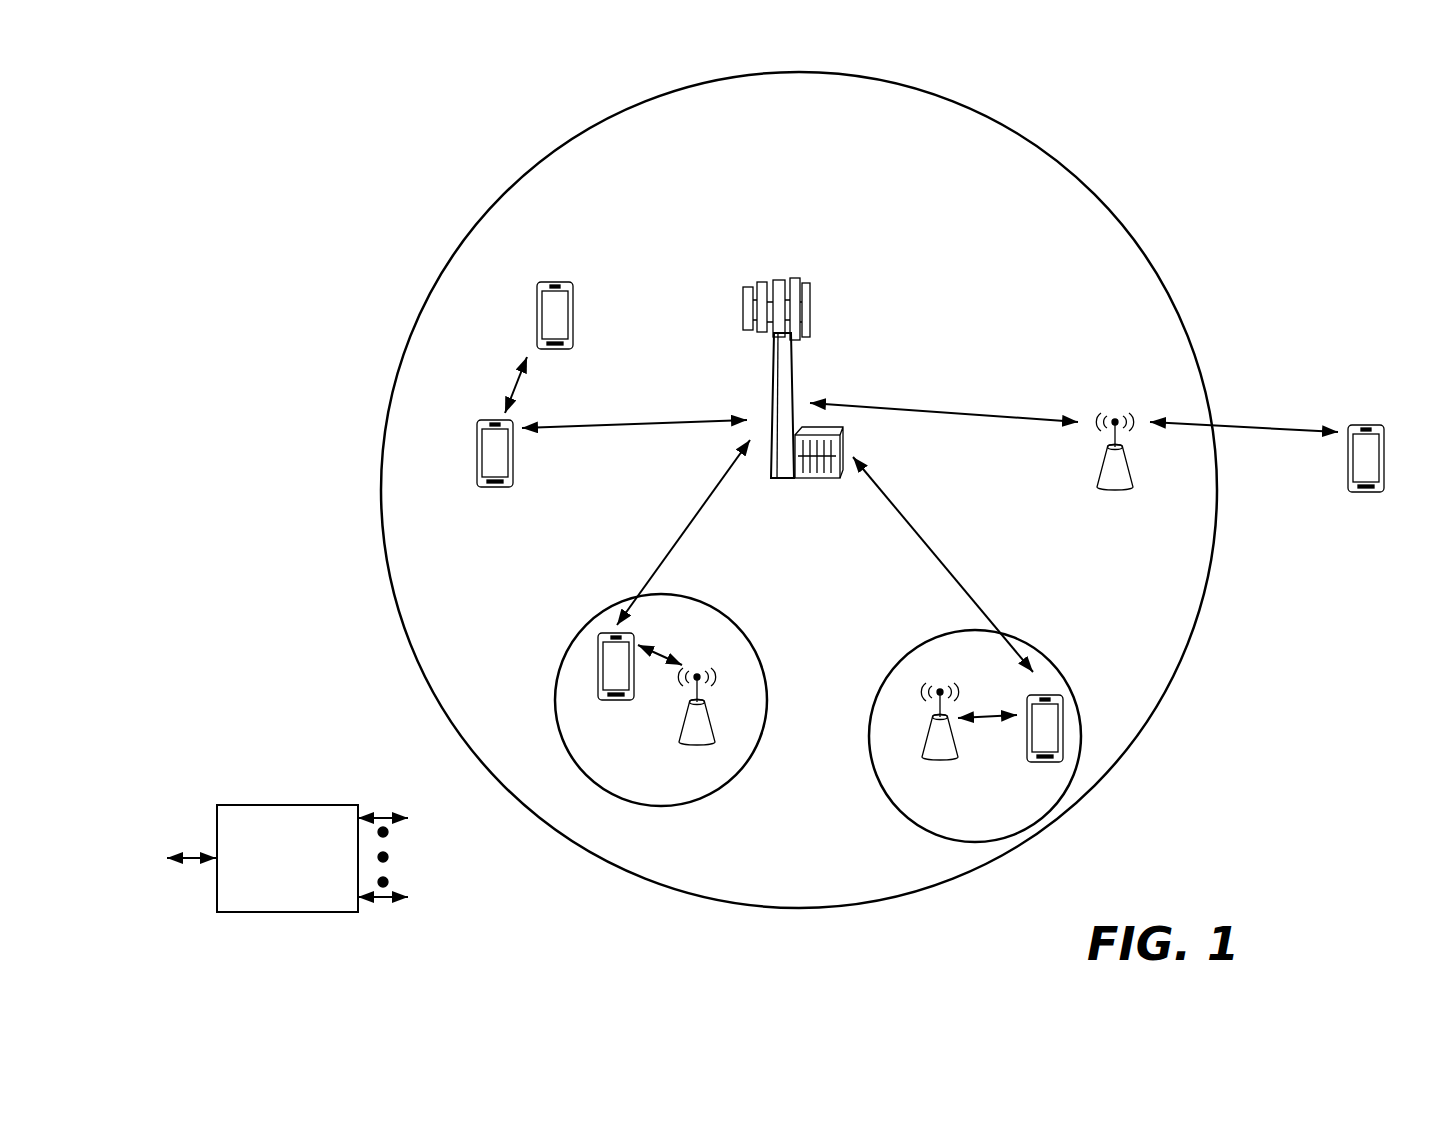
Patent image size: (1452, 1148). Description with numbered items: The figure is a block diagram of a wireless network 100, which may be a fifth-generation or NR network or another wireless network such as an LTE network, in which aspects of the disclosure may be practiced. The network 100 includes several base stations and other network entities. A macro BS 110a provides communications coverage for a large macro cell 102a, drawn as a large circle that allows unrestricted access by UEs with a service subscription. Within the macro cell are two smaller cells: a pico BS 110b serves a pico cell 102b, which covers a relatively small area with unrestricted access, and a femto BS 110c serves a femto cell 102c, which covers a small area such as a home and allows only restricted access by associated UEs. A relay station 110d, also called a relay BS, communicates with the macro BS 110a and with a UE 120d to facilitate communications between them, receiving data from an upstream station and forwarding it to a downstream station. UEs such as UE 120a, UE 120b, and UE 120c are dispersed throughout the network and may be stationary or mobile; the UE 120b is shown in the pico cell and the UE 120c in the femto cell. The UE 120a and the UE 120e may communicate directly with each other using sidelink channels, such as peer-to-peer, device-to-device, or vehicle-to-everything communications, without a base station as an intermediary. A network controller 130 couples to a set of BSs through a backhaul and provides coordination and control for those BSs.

The wireless network 100 is at (274, 67).
The macro cell 102a is at (1078, 178).
The pico cell 102b is at (748, 640).
The femto cell 102c is at (912, 648).
The macro BS 110a is at (785, 270).
The pico BS 110b is at (718, 735).
The femto BS 110c is at (921, 746).
The relay station 110d is at (1115, 410).
The UE 120a is at (477, 447).
The UE 120b is at (606, 702).
The UE 120c is at (1040, 763).
The UE 120d is at (1375, 425).
The UE 120e is at (537, 300).
The network controller 130 is at (285, 805).